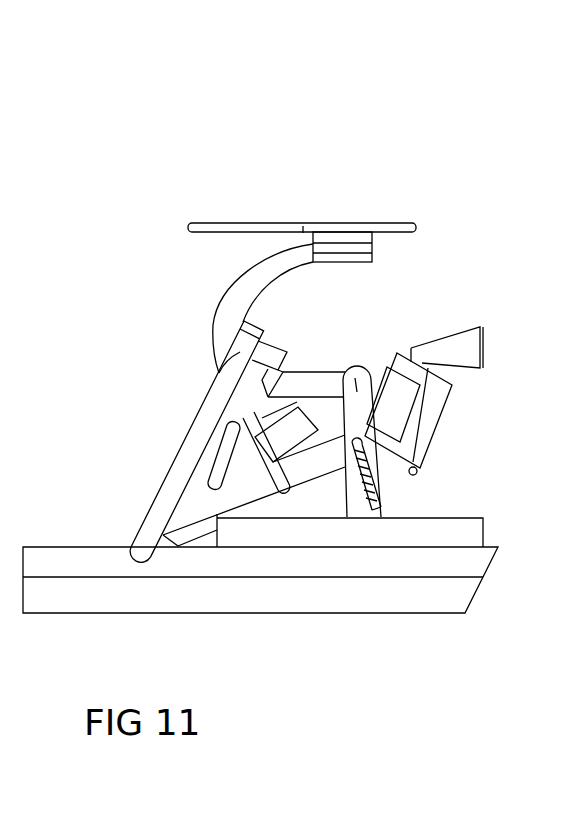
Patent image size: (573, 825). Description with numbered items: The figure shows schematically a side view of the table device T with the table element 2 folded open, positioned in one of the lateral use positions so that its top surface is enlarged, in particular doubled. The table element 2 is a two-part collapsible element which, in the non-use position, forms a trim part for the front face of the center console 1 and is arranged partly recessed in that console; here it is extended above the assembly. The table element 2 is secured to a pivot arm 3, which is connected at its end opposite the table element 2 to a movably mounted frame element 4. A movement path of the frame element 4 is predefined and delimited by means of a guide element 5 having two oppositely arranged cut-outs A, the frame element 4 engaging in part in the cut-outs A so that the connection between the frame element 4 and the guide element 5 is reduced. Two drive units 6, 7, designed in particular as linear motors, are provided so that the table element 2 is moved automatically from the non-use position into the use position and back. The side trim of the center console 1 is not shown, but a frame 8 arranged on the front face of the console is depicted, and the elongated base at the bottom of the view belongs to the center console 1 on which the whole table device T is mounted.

The center console 1 is at (395, 138).
The table element 2 is at (279, 221).
The pivot arm 3 is at (230, 320).
The frame element 4 is at (358, 372).
The guide element 5 is at (362, 510).
The drive unit 6 is at (425, 403).
The drive unit 7 is at (295, 462).
The frame 8 is at (175, 482).
The cut-out A is at (383, 492).